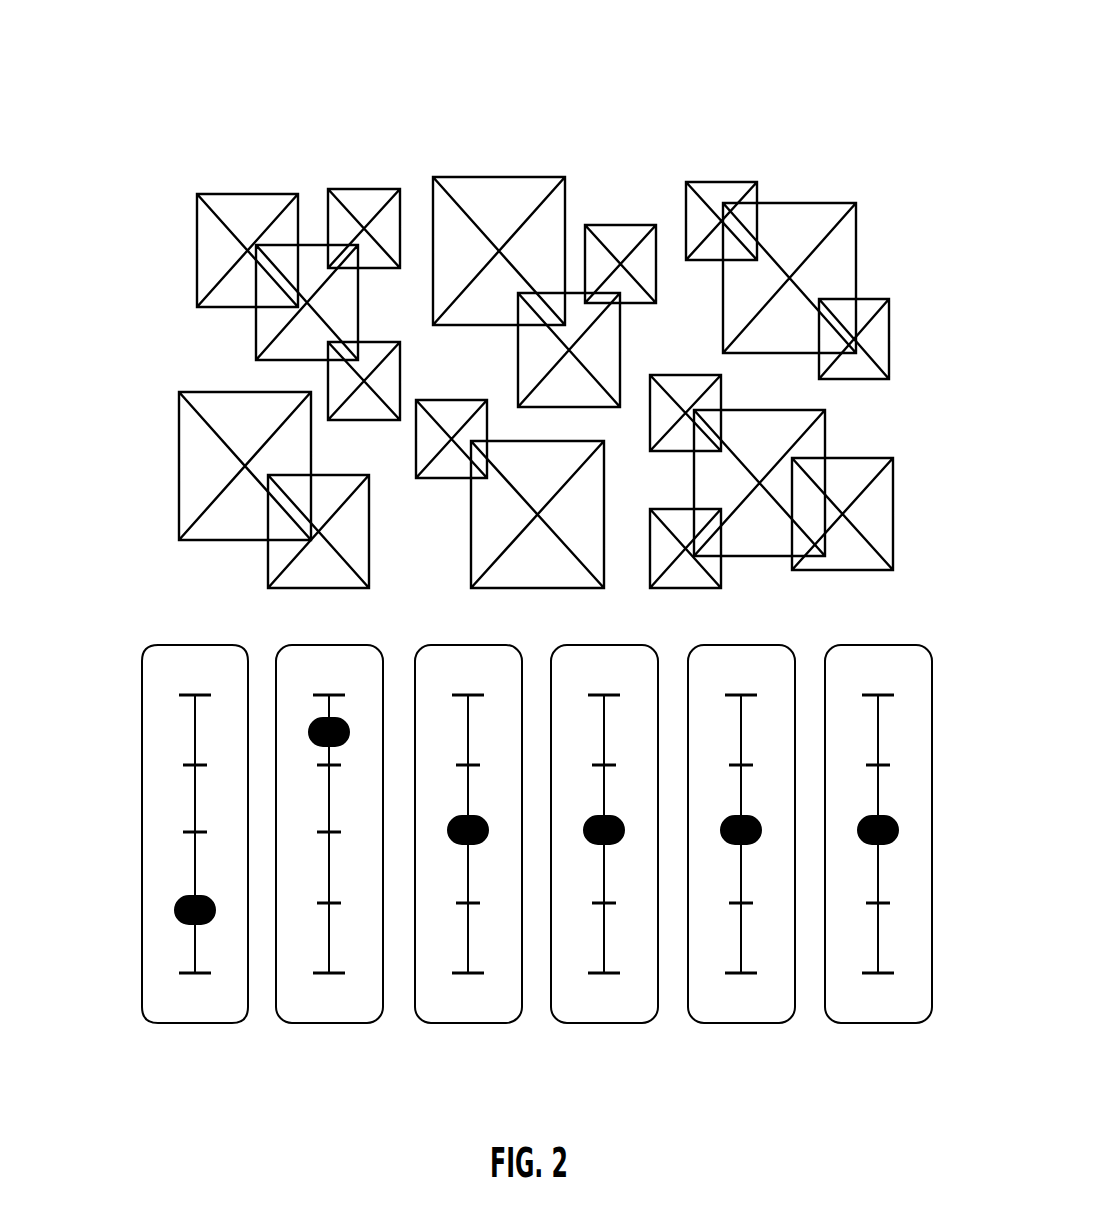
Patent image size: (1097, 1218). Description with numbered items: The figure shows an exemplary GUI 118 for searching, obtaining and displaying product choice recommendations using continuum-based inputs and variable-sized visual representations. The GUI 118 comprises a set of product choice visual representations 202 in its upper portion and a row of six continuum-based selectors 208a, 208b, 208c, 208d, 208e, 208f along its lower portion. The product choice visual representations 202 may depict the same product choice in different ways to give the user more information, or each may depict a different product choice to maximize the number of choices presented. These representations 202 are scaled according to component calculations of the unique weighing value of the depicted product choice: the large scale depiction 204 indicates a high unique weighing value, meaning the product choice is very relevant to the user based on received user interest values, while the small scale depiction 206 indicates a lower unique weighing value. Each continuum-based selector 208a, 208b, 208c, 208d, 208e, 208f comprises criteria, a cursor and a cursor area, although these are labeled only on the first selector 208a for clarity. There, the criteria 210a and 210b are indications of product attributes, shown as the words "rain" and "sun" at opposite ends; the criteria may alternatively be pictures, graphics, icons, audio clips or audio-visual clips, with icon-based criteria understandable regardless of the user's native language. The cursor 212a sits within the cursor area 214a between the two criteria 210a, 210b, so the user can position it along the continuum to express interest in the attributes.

The GUI 118 is at (897, 42).
The product choice visual representations 202 is at (533, 348).
The large scale depiction 204 is at (525, 193).
The small scale depiction 206 is at (857, 308).
The continuum-based selector 208a is at (146, 848).
The continuum-based selector 208b is at (329, 854).
The continuum-based selector 208c is at (468, 854).
The continuum-based selector 208d is at (604, 854).
The continuum-based selector 208e is at (741, 854).
The continuum-based selector 208f is at (878, 854).
The criteria 210a is at (192, 647).
The criteria 210b is at (153, 1021).
The cursor 212a is at (166, 911).
The cursor area 214a is at (193, 795).